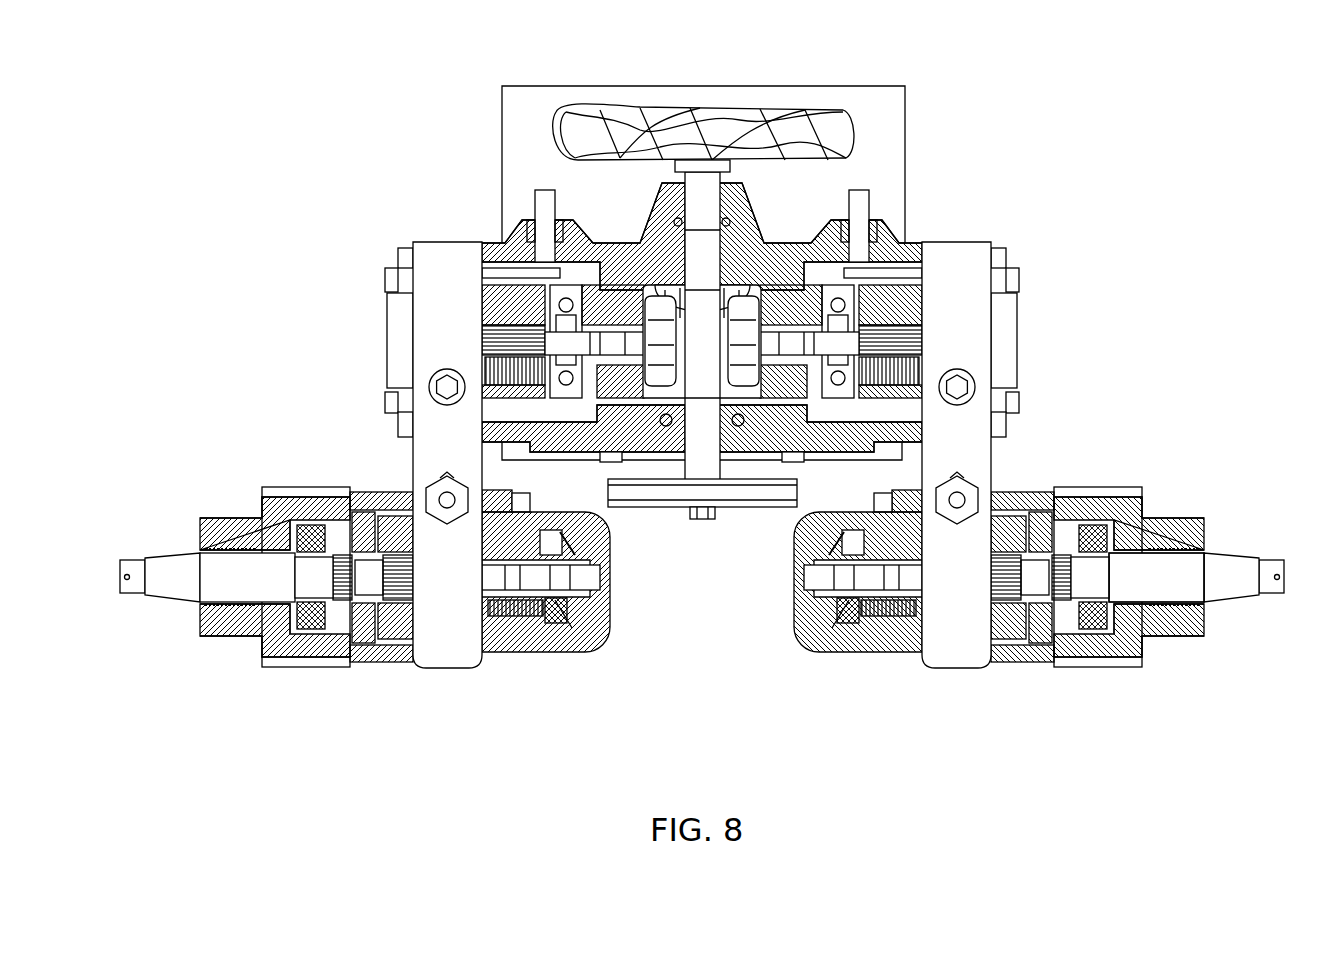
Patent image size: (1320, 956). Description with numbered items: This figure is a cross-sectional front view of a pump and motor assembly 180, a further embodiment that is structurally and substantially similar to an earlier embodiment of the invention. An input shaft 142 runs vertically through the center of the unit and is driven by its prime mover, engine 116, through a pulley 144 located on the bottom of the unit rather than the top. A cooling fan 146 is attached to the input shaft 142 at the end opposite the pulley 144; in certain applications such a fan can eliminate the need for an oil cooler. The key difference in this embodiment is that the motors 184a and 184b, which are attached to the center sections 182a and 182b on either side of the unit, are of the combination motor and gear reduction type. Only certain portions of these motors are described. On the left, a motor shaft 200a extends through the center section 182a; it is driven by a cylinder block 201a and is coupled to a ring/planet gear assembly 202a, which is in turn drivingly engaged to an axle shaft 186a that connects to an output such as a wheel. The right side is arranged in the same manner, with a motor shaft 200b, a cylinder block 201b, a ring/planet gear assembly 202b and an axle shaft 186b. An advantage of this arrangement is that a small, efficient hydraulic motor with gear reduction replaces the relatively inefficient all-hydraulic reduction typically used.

The pump and motor assembly 180 is at (276, 116).
The engine 116 is at (502, 118).
The cooling fan 146 is at (832, 120).
The input shaft 142 is at (727, 177).
The pulley 144 is at (760, 508).
The center section 182a is at (472, 457).
The center section 182b is at (985, 457).
The motor 184a is at (401, 605).
The motor 184b is at (1002, 605).
The axle shaft 186a is at (276, 587).
The axle shaft 186b is at (1183, 587).
The motor shaft 200a is at (598, 578).
The motor shaft 200b is at (806, 578).
The cylinder block 201a is at (510, 626).
The cylinder block 201b is at (894, 626).
The ring/planet gear assembly 202a is at (376, 667).
The ring/planet gear assembly 202b is at (1028, 667).